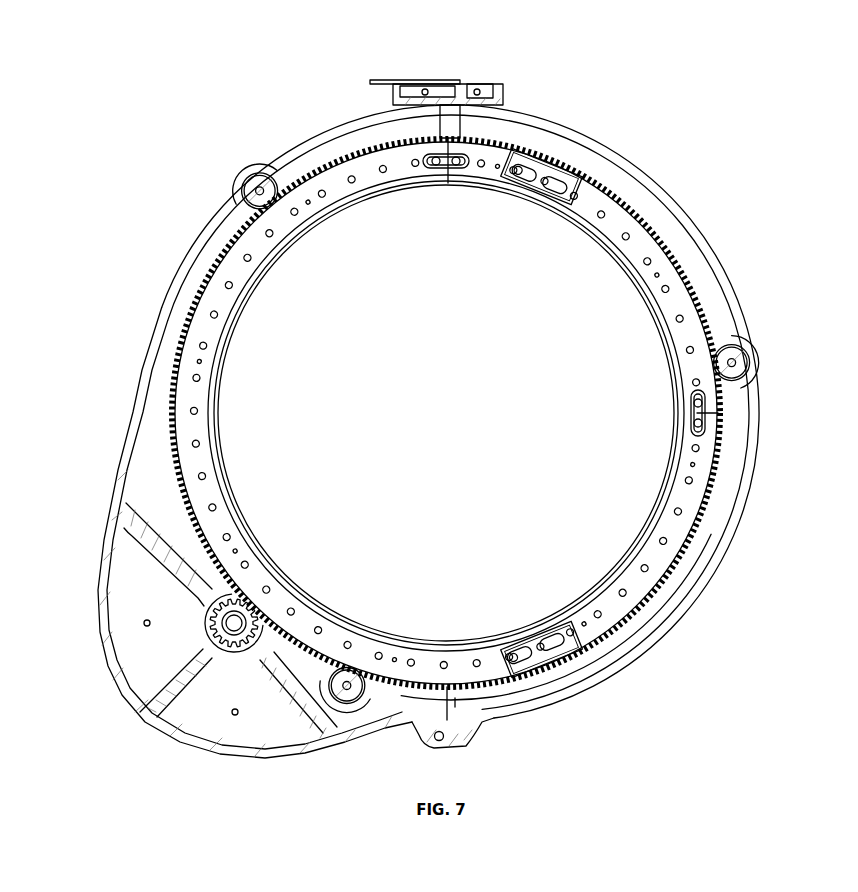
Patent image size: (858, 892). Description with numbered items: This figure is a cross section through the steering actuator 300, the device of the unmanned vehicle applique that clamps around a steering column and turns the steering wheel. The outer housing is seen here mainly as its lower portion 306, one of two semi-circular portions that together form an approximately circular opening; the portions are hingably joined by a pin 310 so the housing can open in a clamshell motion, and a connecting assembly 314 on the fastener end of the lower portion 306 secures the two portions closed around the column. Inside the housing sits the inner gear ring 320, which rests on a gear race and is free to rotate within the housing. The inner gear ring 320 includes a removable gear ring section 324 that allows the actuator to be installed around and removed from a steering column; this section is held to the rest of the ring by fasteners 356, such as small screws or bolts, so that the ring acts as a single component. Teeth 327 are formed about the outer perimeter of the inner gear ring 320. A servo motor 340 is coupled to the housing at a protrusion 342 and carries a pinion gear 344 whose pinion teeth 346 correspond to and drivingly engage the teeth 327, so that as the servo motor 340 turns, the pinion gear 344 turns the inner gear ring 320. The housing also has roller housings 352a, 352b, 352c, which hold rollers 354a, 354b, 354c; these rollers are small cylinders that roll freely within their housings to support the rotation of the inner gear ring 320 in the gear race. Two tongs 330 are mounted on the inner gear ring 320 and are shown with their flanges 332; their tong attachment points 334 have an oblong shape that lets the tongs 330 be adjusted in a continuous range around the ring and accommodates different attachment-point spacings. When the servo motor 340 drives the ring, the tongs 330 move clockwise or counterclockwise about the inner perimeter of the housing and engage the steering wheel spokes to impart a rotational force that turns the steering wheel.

The steering actuator 300 is at (116, 206).
The lower portion 306 is at (153, 333).
The pin 310 is at (427, 741).
The connecting assembly 314 is at (443, 82).
The inner gear ring 320 is at (200, 429).
The removable gear ring section 324 is at (666, 300).
The teeth 327 is at (196, 289).
The tongs 330 is at (513, 156).
The flanges 332 is at (537, 184).
The tong attachment points 334 is at (562, 189).
The servo motor 340 is at (303, 587).
The protrusion 342 is at (103, 616).
The pinion gear 344 is at (233, 632).
The pinion teeth 346 is at (210, 622).
The roller housing 352a is at (243, 178).
The roller housing 352b is at (757, 342).
The roller boss 352c is at (345, 697).
The roller 354a is at (253, 176).
The roller 354b is at (752, 361).
The roller 354c is at (364, 688).
The fasteners 356 is at (441, 172).